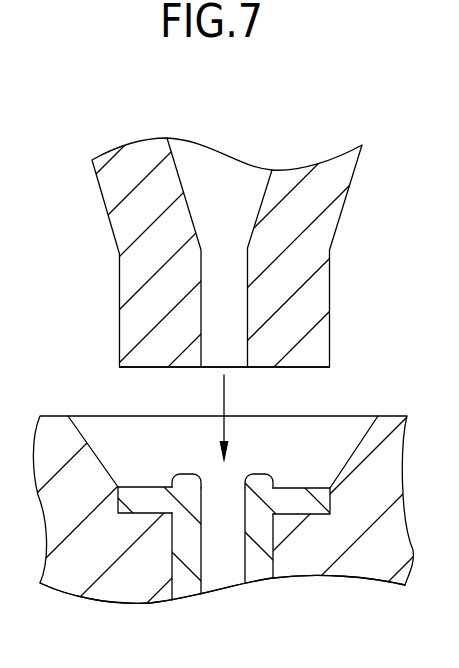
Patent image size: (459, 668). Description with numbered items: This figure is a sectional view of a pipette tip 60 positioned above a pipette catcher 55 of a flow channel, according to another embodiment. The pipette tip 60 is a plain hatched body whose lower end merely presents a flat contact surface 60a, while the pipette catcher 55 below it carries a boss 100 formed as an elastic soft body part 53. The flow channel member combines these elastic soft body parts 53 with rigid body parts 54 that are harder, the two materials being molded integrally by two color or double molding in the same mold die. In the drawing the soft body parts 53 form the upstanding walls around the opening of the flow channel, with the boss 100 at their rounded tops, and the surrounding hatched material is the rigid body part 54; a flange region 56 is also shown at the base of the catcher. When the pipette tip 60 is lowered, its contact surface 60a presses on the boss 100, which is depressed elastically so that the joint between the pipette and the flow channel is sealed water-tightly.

The pipette tip 60 is at (250, 131).
The contact surface 60a is at (145, 368).
The pipette catcher 55 is at (318, 440).
The flange (step portion) of insert 56 is at (143, 487).
The boss 100 is at (186, 476).
The soft body part 53 is at (188, 590).
The rigid body part 54 is at (122, 598).